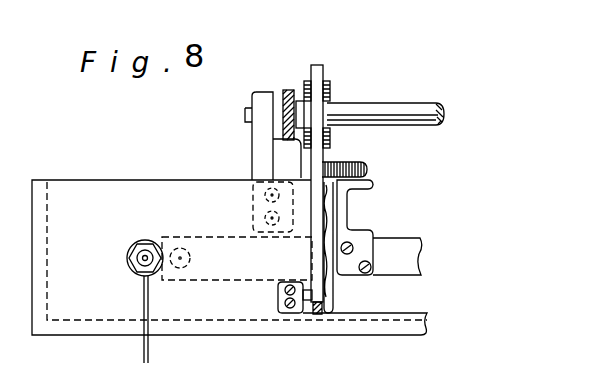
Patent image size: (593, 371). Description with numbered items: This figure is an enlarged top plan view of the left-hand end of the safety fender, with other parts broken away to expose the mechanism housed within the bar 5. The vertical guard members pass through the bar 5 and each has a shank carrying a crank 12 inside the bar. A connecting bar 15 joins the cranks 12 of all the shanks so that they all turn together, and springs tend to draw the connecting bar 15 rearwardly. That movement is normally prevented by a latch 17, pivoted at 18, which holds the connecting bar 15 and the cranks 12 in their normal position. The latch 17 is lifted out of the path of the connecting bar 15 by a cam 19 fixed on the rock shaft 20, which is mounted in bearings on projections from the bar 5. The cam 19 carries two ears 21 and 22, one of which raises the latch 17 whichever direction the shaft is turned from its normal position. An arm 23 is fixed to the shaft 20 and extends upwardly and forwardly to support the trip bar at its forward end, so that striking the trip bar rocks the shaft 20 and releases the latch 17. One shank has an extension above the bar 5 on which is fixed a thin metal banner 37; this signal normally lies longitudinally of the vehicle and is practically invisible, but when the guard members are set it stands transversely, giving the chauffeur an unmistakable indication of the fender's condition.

The bar 5 is at (275, 337).
The crank 12 is at (180, 268).
The connecting bar 15 is at (393, 245).
The latch 17 is at (366, 173).
The pivot 18 is at (332, 295).
The cam 19 is at (325, 113).
The rock shaft 20 is at (393, 110).
The ear 21 is at (325, 145).
The ear 22 is at (330, 88).
The arm 23 is at (283, 123).
The metal banner 37 is at (150, 356).